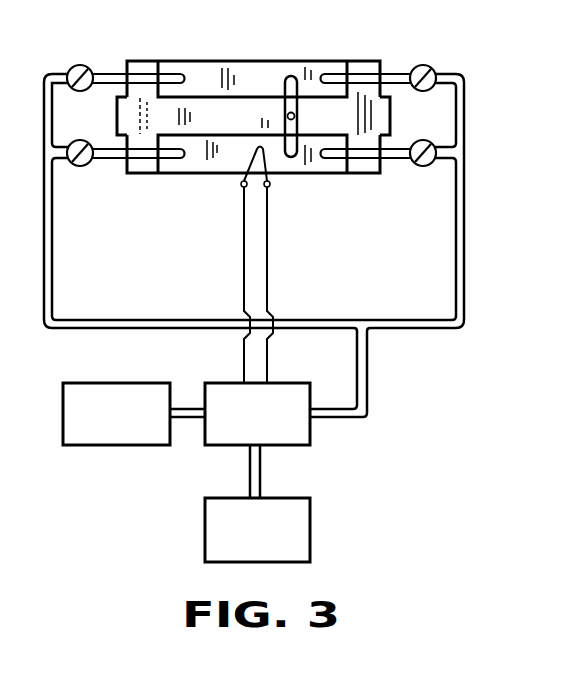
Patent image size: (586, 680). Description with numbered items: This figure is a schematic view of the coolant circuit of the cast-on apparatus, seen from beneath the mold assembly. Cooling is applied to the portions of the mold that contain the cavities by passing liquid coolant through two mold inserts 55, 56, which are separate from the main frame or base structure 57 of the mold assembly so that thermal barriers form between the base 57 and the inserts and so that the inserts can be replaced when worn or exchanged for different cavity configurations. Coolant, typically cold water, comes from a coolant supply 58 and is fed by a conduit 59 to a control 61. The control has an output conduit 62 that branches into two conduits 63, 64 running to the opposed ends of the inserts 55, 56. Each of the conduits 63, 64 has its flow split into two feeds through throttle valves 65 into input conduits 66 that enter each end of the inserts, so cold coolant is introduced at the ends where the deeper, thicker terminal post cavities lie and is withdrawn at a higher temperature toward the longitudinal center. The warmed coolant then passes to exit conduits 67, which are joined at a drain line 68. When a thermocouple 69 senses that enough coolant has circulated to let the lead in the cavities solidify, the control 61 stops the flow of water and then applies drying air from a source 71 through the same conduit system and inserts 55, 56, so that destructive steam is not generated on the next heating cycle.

The mold insert 55 is at (212, 66).
The mold insert 56 is at (213, 174).
The base structure 57 is at (258, 97).
The coolant supply 58 is at (77, 386).
The conduit 59 is at (190, 409).
The control 61 is at (293, 388).
The output conduit 62 is at (350, 419).
The conduit 63 is at (292, 320).
The conduit 64 is at (410, 326).
The throttle valve 65 is at (74, 66).
The input conduit 66 is at (140, 73).
The exit conduit 67 is at (297, 142).
The drain line 68 is at (284, 116).
The thermocouple 69 is at (265, 156).
The drying air source 71 is at (210, 543).